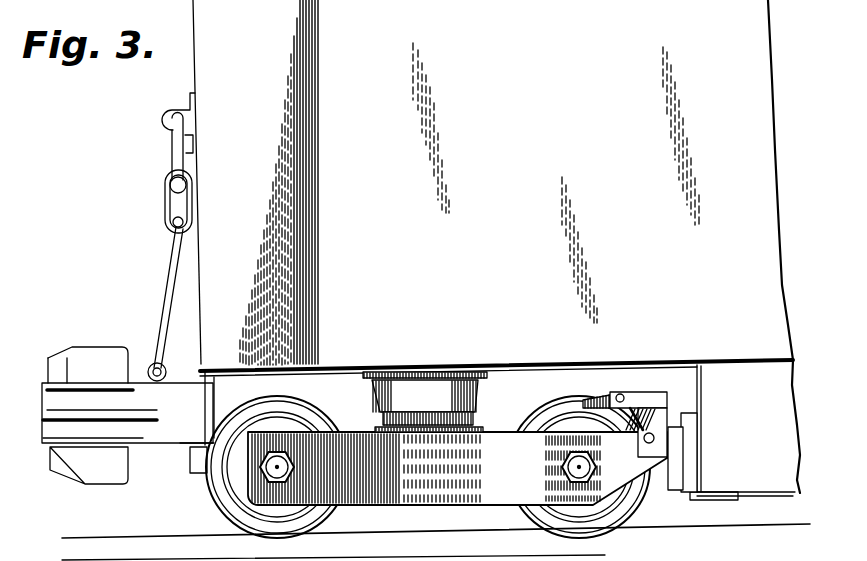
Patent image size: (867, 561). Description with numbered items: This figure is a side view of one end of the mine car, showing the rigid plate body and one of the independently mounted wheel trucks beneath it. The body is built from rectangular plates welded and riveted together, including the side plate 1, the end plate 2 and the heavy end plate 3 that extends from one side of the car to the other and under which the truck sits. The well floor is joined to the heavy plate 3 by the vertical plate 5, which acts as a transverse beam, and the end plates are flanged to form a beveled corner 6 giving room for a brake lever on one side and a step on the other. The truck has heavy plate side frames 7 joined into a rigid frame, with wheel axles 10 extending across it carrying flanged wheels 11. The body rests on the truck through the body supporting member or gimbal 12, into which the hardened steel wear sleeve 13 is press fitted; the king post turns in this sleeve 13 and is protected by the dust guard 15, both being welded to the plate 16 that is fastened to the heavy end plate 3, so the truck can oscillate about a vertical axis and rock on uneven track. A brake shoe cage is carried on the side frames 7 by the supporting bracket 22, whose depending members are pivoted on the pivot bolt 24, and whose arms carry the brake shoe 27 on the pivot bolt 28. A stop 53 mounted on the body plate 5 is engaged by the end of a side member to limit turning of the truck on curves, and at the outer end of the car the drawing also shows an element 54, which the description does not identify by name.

The side plate 1 is at (772, 288).
The end plate 2 is at (201, 75).
The heavy end plate 3 is at (642, 364).
The vertical plate 5 is at (702, 431).
The beveled corner 6 is at (287, 170).
The side frame 7 is at (472, 493).
The wheel axle 10 is at (273, 470).
The flanged wheel 11 is at (338, 418).
The body supporting member or gimbal 12 is at (432, 433).
The hardened steel sleeve 13 is at (472, 420).
The dust guard 15 is at (458, 393).
The plate 16 is at (478, 373).
The supporting bracket 22 is at (666, 412).
The pivot bolt 24 is at (650, 444).
The brake shoe 27 is at (602, 394).
The pivot bolt 28 is at (621, 397).
The stop 53 is at (690, 468).
The coupler 54 is at (182, 397).